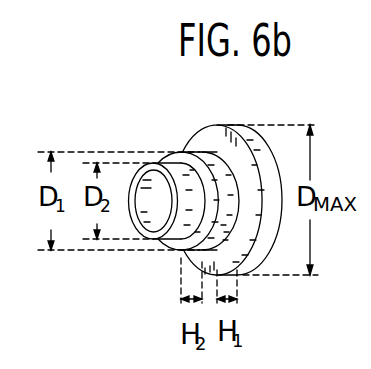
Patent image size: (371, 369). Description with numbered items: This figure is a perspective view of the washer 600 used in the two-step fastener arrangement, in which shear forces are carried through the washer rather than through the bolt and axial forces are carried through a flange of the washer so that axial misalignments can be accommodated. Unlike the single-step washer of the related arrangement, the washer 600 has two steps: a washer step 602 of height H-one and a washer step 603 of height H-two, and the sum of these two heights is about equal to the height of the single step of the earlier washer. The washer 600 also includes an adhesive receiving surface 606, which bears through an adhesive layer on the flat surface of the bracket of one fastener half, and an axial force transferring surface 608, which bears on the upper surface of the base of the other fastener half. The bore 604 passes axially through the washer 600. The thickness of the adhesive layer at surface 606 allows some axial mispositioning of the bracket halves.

The washer 600 is at (238, 125).
The washer step 602 is at (205, 153).
The washer step 603 is at (130, 167).
The inner bore surface 604 is at (142, 200).
The adhesive receiving surface 606 is at (215, 152).
The axial force transferring surface 608 is at (168, 160).